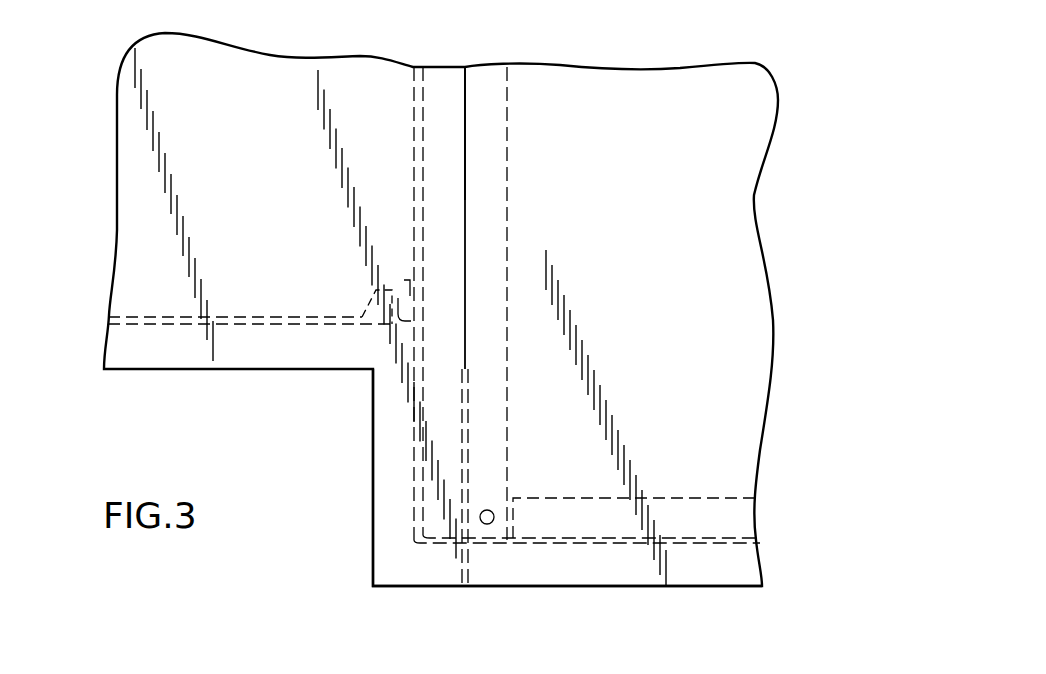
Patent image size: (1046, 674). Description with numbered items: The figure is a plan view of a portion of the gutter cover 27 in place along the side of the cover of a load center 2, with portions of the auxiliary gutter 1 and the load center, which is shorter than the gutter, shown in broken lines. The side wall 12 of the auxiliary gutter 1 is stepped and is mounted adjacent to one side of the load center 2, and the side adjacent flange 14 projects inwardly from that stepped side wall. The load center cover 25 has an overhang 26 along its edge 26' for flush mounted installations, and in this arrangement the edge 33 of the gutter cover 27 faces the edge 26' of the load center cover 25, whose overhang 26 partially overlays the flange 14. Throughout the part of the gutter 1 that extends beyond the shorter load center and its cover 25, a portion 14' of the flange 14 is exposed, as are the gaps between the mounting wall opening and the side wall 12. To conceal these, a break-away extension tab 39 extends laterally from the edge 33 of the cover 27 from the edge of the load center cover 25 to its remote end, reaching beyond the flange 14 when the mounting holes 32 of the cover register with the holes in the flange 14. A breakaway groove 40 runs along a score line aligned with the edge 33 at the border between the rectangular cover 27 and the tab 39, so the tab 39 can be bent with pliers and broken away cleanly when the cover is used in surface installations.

The auxiliary gutter 1 is at (748, 387).
The load center 2 is at (150, 238).
The side wall 12 is at (415, 462).
The side adjacent flange 14 is at (624, 488).
The exposed portion of flange 14' is at (373, 314).
The load center cover 25 is at (272, 192).
The overhang 26 is at (439, 281).
The edge of load center cover 26' is at (390, 109).
The gutter cover 27 is at (670, 189).
The mounting holes 32 is at (488, 525).
The edge of gutter cover 33 is at (465, 145).
The break-away extension tab 39 is at (388, 542).
The breakaway groove 40 is at (465, 422).